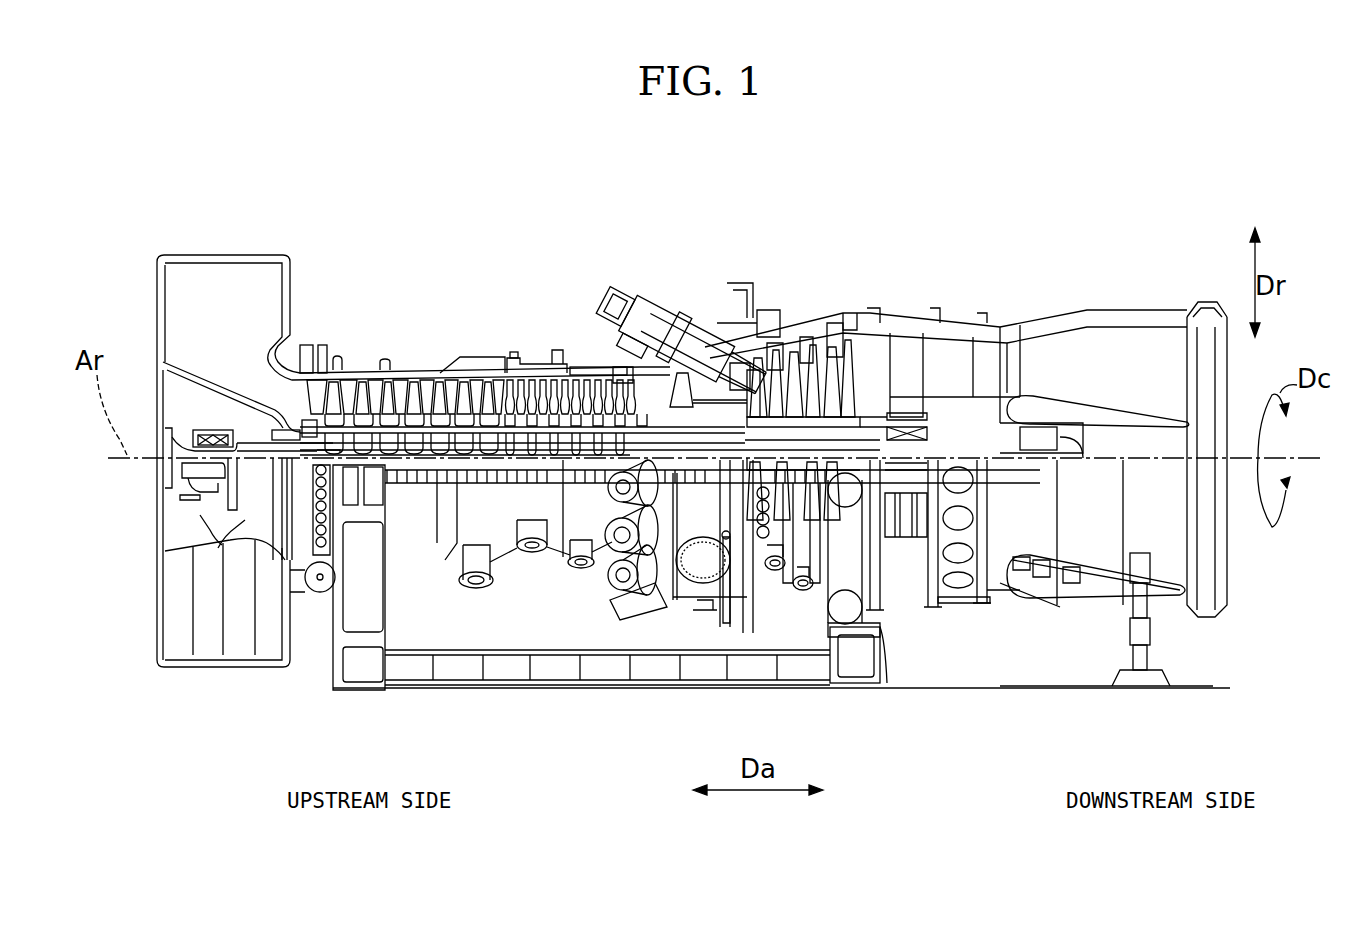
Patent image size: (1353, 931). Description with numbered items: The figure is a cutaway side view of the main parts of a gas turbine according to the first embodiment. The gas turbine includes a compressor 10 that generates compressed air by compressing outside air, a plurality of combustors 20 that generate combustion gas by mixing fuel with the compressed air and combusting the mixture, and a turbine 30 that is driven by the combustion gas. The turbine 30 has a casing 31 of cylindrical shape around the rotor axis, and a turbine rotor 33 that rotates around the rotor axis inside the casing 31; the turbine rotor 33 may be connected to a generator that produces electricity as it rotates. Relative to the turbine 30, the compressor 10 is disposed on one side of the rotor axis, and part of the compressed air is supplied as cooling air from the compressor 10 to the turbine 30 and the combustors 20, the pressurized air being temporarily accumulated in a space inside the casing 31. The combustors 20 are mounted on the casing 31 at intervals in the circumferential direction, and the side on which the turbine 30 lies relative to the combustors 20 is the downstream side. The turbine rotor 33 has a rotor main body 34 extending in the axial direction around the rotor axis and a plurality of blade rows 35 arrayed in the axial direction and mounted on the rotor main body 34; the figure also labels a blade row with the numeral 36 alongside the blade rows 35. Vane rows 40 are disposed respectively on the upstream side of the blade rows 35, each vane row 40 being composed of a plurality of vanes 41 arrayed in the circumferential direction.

The compressor 10 is at (693, 472).
The combustor 20 is at (613, 297).
The turbine 30 is at (856, 327).
The casing 31 is at (850, 303).
The turbine rotor 33 is at (791, 327).
The rotor main body 34 is at (798, 370).
The blade row 35 is at (788, 443).
The rotor blade platform 36 is at (858, 187).
The vane row 40 is at (745, 380).
The vane 41 is at (770, 331).